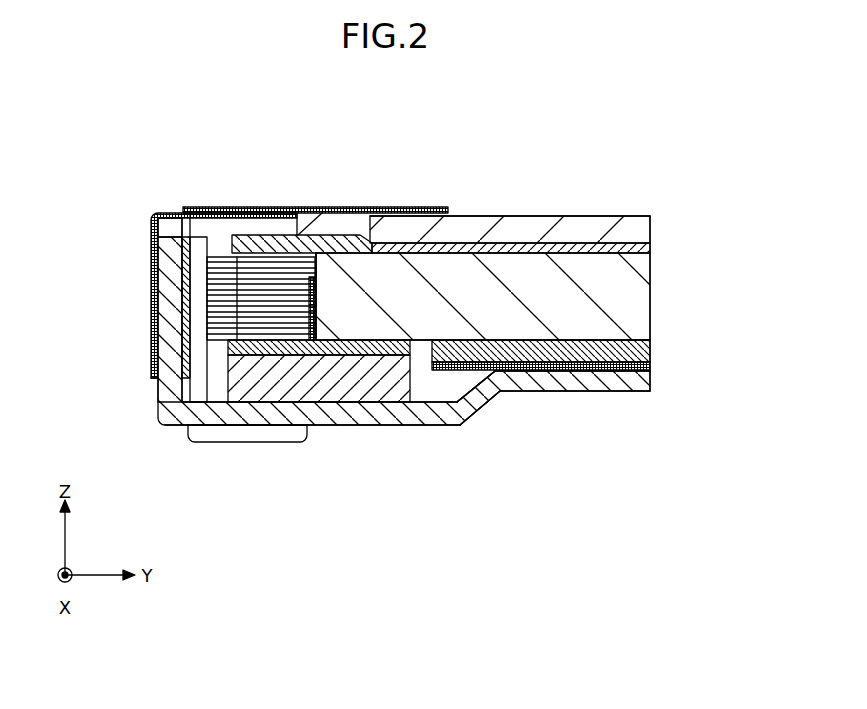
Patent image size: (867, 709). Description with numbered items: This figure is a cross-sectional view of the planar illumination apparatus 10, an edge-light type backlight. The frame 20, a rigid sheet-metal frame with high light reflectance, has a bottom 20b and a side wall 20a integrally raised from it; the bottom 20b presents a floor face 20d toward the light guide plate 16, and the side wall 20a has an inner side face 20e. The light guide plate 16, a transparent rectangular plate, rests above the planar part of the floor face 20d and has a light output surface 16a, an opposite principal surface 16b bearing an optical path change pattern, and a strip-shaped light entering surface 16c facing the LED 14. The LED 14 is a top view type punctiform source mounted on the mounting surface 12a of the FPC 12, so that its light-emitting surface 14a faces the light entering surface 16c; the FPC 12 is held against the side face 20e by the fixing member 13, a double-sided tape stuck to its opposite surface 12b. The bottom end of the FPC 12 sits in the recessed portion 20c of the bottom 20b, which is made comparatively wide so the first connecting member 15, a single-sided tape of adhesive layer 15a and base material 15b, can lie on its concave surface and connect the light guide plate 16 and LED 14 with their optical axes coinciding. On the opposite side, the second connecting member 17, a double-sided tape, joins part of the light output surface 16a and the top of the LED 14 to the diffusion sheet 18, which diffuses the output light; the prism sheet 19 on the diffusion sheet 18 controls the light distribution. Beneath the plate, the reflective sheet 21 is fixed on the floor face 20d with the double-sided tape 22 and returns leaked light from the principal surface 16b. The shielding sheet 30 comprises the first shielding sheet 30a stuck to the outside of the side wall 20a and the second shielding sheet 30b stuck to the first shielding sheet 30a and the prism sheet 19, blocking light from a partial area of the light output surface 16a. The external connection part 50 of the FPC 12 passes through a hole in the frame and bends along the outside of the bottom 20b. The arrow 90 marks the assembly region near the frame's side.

The planar illumination apparatus 10 is at (668, 165).
The FPC 12 is at (156, 313).
The mounting surface 12a is at (205, 236).
The opposite surface 12b is at (169, 242).
The fixing member 13 is at (186, 375).
The LED 14 is at (303, 323).
The light-emitting surface 14a is at (316, 300).
The first connecting member 15 is at (320, 437).
The adhesive layer 15a is at (229, 345).
The base material 15b is at (412, 378).
The light guide plate 16 is at (487, 307).
The light output surface 16a is at (471, 214).
The principal surface 16b is at (591, 343).
The light entering surface 16c is at (319, 273).
The second connecting member 17 is at (233, 238).
The diffusion sheet 18 is at (652, 248).
The prism sheet 19 is at (652, 224).
The frame 20 is at (382, 323).
The side wall 20a is at (182, 377).
The bottom 20b is at (548, 393).
The recessed portion 20c is at (496, 408).
The floor face 20d is at (436, 380).
The side face 20e is at (186, 228).
The reflective sheet 21 is at (652, 350).
The double-sided tape 22 is at (652, 369).
The shielding sheet 30 is at (268, 237).
The first shielding sheet 30a is at (150, 226).
The second shielding sheet 30b is at (333, 208).
The external connection part 50 is at (195, 443).
The backlight unit 90 is at (558, 197).